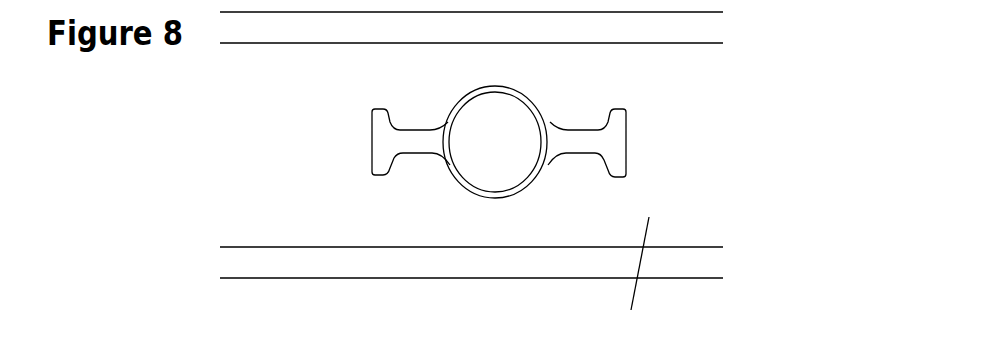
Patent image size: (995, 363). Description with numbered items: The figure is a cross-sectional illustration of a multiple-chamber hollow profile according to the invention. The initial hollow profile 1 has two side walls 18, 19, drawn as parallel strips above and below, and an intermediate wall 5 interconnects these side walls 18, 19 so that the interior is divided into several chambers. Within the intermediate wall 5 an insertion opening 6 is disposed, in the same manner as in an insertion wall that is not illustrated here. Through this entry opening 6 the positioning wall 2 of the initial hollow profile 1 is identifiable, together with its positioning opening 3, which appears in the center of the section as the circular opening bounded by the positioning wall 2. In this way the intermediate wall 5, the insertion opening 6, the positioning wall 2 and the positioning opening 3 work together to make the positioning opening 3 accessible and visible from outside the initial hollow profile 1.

The initial hollow profile 1 is at (143, 290).
The positioning wall 2 is at (425, 142).
The positioning opening 3 is at (509, 125).
The intermediate wall 5 is at (632, 285).
The insertion opening 6 is at (568, 144).
The side wall 18 is at (335, 38).
The side wall 19 is at (410, 265).